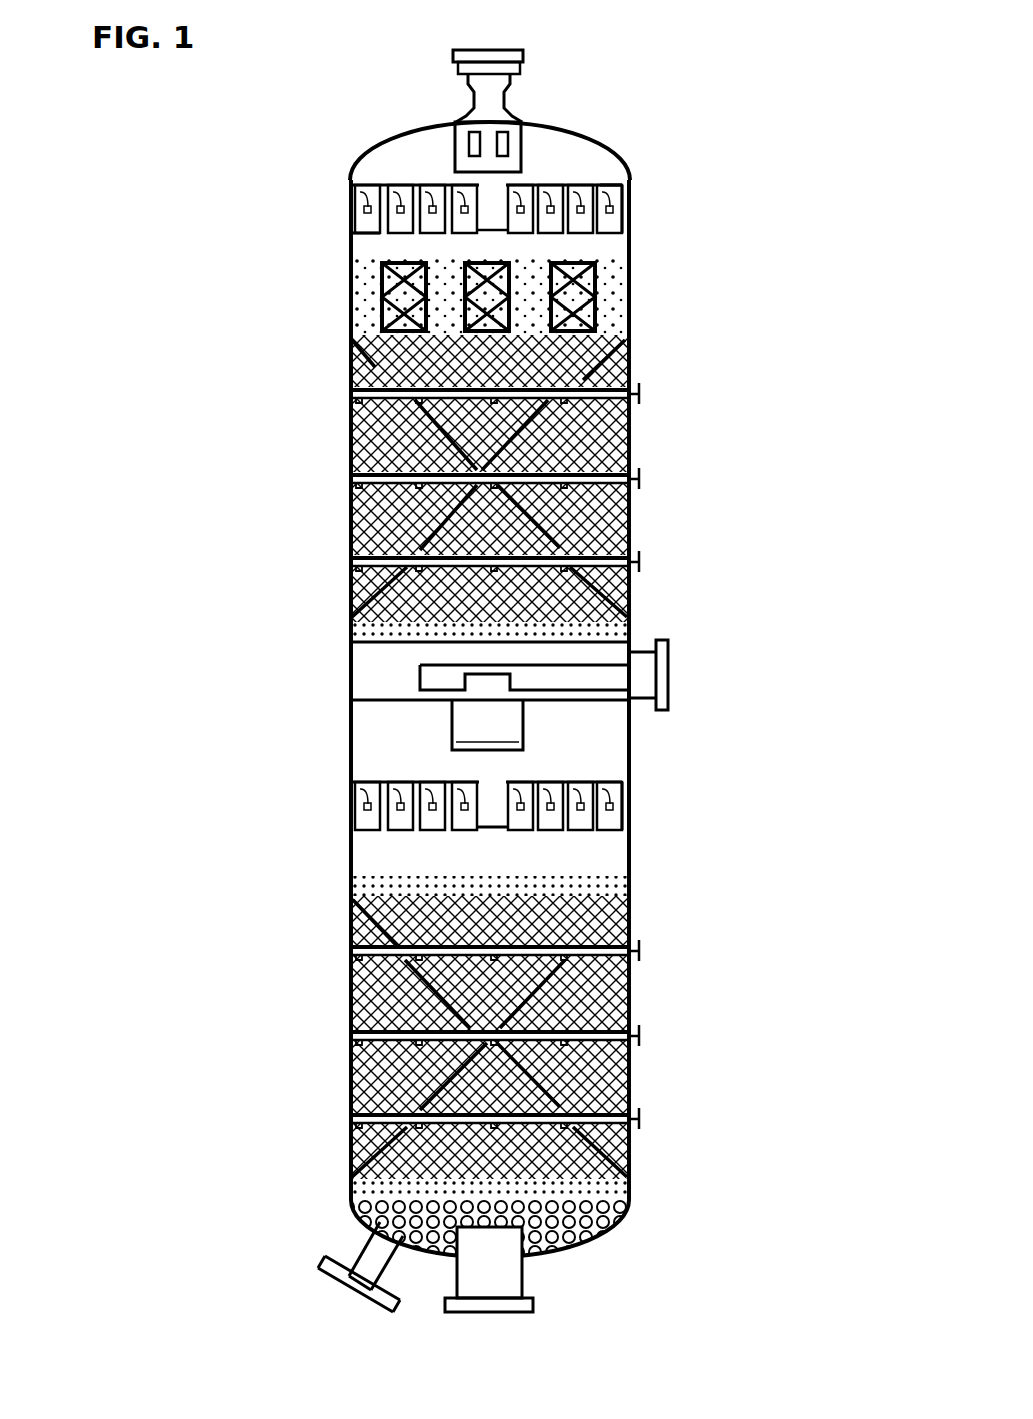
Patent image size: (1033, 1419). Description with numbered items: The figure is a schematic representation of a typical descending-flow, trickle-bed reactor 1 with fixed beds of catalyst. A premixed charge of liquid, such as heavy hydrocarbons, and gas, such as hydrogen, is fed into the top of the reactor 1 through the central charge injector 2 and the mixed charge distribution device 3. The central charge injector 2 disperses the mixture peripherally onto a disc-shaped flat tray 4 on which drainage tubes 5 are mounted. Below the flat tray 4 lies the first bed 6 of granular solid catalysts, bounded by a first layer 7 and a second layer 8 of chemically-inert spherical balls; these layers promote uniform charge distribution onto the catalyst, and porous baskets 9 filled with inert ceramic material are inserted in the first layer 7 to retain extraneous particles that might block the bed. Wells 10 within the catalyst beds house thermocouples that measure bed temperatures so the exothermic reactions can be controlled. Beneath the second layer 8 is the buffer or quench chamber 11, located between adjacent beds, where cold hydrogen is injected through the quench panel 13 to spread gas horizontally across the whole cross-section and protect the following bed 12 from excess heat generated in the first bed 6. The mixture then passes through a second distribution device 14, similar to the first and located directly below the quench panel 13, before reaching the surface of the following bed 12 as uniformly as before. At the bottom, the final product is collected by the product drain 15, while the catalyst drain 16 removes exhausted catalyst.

The descending-flow reactor 1 is at (678, 78).
The central charge injector 2 is at (455, 124).
The mixed charge distribution device 3 is at (352, 182).
The flat tray 4 is at (628, 222).
The drainage tubes 5 is at (352, 236).
The first bed 6 is at (630, 428).
The first layer 7 is at (630, 300).
The second layer 8 is at (350, 633).
The porous baskets 9 is at (483, 322).
The wells 10 is at (350, 558).
The buffer chamber 11 is at (590, 745).
The following bed 12 is at (630, 1000).
The quench panel 13 is at (455, 724).
The second distribution device 14 is at (350, 833).
The product drain 15 is at (497, 1272).
The catalyst drain 16 is at (362, 1268).